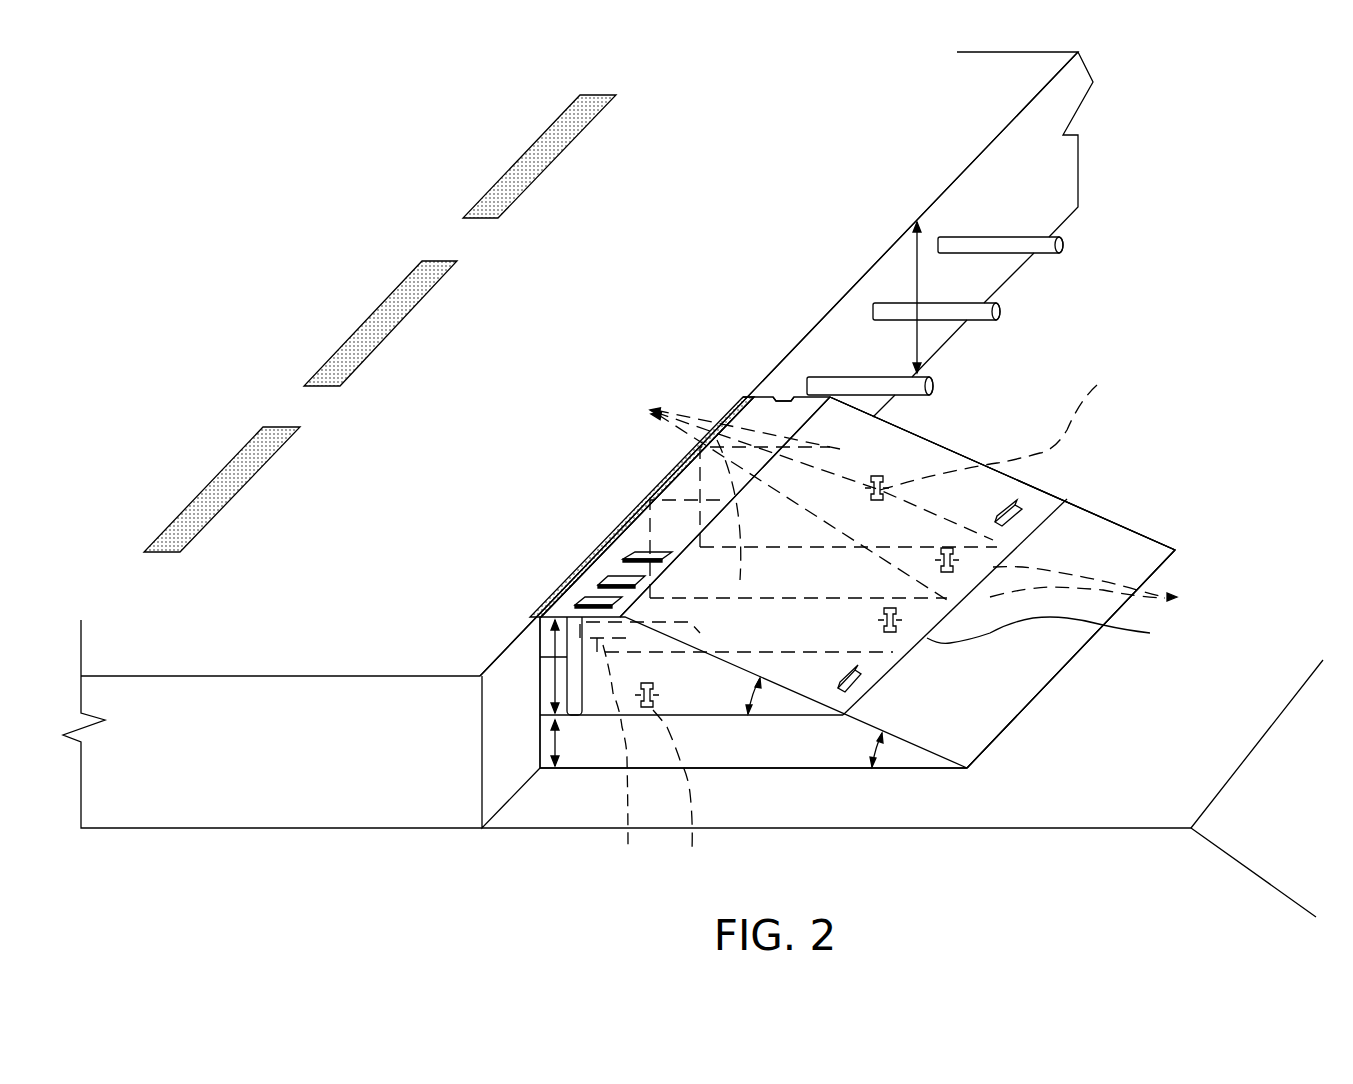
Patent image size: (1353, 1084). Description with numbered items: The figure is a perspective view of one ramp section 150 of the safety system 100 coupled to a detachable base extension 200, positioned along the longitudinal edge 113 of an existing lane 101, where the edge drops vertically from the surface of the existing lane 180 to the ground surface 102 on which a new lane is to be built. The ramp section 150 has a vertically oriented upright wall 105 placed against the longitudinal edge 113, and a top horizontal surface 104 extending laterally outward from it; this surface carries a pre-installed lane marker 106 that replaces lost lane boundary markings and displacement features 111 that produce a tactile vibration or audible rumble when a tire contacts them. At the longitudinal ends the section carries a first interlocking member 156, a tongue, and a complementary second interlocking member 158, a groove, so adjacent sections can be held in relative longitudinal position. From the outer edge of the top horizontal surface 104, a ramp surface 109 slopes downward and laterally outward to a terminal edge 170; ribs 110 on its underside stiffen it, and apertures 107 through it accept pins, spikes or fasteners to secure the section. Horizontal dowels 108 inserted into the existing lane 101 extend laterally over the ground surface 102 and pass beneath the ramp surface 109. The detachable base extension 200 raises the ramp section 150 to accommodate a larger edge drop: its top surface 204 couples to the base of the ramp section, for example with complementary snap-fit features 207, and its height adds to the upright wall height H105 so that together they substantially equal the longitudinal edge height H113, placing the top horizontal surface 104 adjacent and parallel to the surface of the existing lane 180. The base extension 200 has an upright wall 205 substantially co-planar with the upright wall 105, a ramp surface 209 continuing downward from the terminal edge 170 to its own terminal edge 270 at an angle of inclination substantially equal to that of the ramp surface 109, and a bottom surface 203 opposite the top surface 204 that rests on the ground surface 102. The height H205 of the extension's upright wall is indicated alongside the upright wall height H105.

The safety system 100 is at (1044, 468).
The existing lane 101 is at (494, 338).
The ground surface 102 is at (1256, 670).
The top horizontal surface 104 is at (752, 396).
The upright wall 105 is at (537, 713).
The lane marker 106 is at (628, 520).
The aperture 107 is at (1017, 523).
The horizontal dowel 108 is at (1002, 307).
The ramp surface 109 is at (907, 457).
The rib 110 is at (798, 490).
The displacement feature 111 is at (623, 558).
The longitudinal edge 113 is at (1017, 170).
The ramp section 150 is at (943, 447).
The first interlocking member 156 is at (560, 595).
The second interlocking member 158 is at (784, 385).
The terminal edge 170 is at (1150, 633).
The surface of the existing lane 180 is at (299, 601).
The detachable base extension 200 is at (1132, 528).
The bottom surface 203 is at (815, 776).
The top surface 204 is at (713, 715).
The upright wall 205 is at (537, 742).
The snap-fit features 207 is at (903, 621).
The ramp surface 209 is at (987, 705).
The terminal edge 270 is at (1073, 657).
The upright wall height H105 is at (540, 657).
The longitudinal edge height H113 is at (913, 257).
The height of step 205 H205 is at (550, 750).